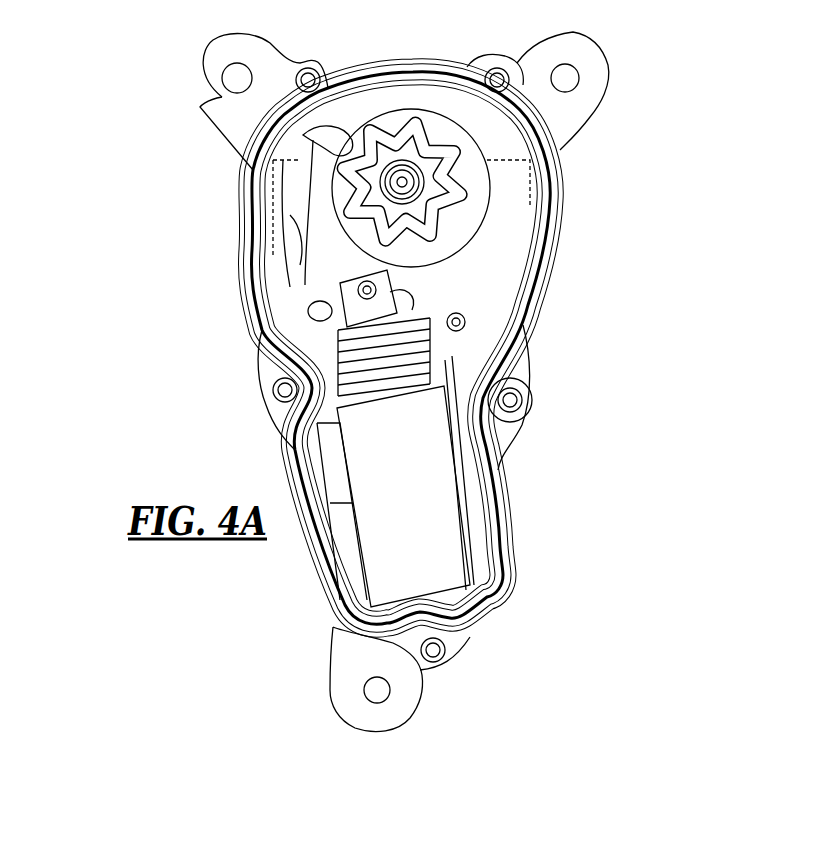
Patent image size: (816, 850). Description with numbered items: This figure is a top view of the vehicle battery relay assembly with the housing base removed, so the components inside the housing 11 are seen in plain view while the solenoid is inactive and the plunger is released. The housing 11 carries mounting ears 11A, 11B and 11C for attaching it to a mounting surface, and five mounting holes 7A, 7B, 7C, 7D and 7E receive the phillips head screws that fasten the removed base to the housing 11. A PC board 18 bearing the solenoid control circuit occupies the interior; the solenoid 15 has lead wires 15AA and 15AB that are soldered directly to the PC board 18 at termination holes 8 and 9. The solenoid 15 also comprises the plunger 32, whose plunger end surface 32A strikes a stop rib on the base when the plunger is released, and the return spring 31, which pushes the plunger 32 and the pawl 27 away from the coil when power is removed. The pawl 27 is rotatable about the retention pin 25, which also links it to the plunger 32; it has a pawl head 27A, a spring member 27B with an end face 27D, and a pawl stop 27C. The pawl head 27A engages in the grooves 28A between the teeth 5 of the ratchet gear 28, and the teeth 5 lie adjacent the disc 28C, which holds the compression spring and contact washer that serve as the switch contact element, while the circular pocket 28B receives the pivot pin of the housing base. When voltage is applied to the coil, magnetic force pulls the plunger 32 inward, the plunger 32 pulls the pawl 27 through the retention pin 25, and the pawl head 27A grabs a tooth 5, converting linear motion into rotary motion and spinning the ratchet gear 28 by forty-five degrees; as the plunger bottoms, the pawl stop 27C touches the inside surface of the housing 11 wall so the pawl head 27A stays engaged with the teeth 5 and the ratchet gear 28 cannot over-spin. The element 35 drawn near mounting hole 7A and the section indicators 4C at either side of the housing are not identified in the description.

The housing 11 is at (516, 547).
The mounting ear 11A is at (590, 80).
The mounting ear 11B is at (222, 97).
The mounting ear 11C is at (397, 700).
The mounting hole 7A is at (505, 72).
The mounting hole 7B is at (520, 392).
The mounting hole 7C is at (450, 652).
The mounting hole 7D is at (280, 400).
The mounting hole 7E is at (310, 70).
The screw boss 35 is at (497, 72).
The ratchet gear 28 is at (492, 217).
The grooves 28A is at (445, 165).
The circular pocket 28B is at (396, 160).
The disc 28C is at (440, 264).
The PC board 18 is at (490, 266).
The pawl 27 is at (318, 178).
The pawl head 27A is at (270, 150).
The spring member 27B is at (300, 268).
The pawl stop 27C is at (262, 272).
The end face 27D is at (300, 296).
The teeth 5 is at (280, 223).
The plunger 32 is at (345, 318).
The plunger end surface 32A is at (360, 286).
The retention pin 25 is at (340, 322).
The return spring 31 is at (335, 405).
The solenoid 15 is at (450, 490).
The solenoid lead wire 15AA is at (458, 460).
The solenoid lead wire 15AB is at (512, 400).
The termination hole 9 is at (455, 353).
The termination hole 8 is at (470, 385).
The section line 4C is at (217, 182).